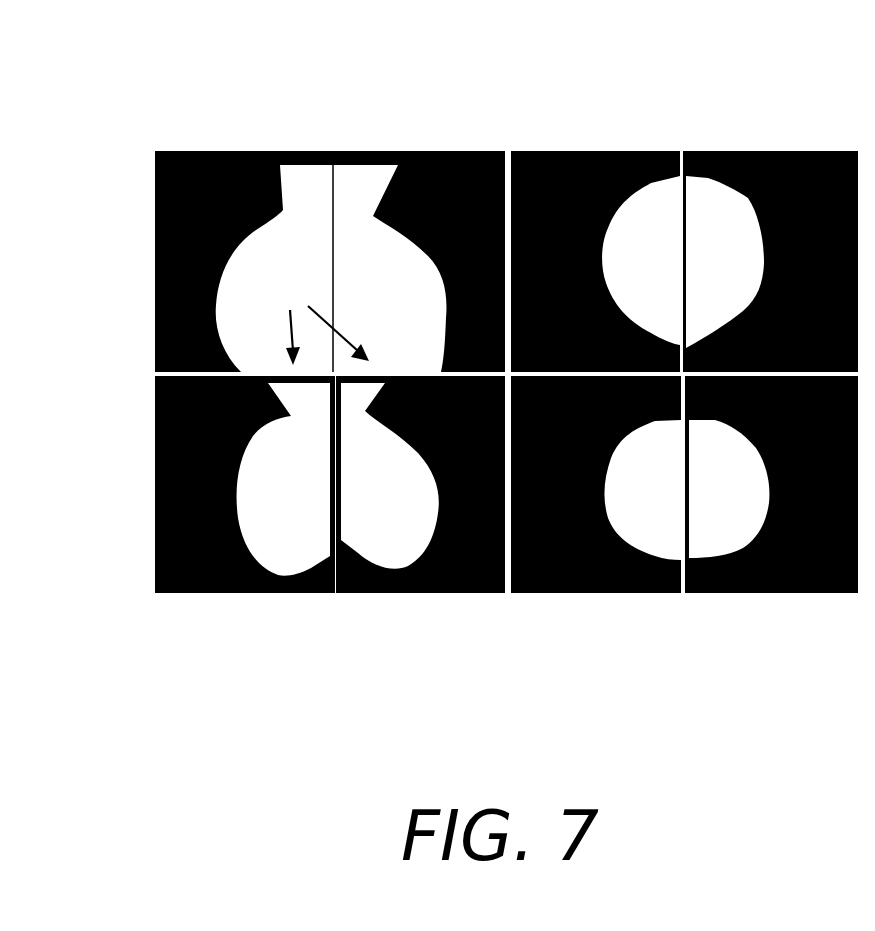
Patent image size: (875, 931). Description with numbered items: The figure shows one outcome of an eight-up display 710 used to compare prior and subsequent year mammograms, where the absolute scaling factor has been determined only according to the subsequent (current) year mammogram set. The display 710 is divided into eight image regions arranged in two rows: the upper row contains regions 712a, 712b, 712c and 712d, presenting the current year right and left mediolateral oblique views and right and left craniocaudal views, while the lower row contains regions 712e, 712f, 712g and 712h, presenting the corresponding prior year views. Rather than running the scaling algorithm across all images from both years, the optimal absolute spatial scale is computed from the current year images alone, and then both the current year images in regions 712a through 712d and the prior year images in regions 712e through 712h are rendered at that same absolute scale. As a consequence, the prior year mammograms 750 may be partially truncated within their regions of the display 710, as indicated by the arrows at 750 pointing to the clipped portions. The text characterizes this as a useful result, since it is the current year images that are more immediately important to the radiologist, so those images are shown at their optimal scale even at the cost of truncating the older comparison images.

The display screen showing mammography images 710 is at (449, 377).
The viewport displaying RMLO1 image 712a is at (296, 145).
The viewport displaying LMLO1 image 712b is at (458, 143).
The viewport displaying RCC1 image 712c is at (645, 143).
The viewport displaying LCC1 image 712d is at (810, 143).
The viewport displaying RMLO2 image 712e is at (182, 588).
The viewport displaying LMLO2 image 712f is at (345, 588).
The viewport displaying RCC2 image 712g is at (533, 588).
The viewport displaying LCC2 image 712h is at (695, 588).
The prior year mammograms 750 is at (310, 315).